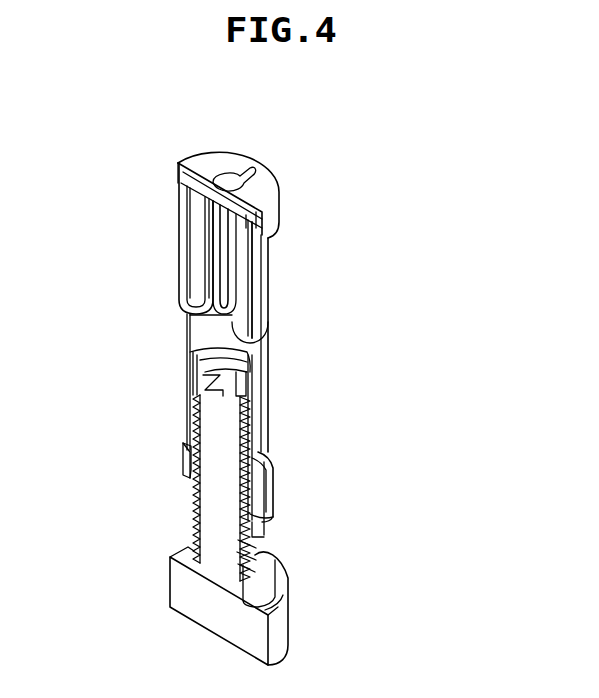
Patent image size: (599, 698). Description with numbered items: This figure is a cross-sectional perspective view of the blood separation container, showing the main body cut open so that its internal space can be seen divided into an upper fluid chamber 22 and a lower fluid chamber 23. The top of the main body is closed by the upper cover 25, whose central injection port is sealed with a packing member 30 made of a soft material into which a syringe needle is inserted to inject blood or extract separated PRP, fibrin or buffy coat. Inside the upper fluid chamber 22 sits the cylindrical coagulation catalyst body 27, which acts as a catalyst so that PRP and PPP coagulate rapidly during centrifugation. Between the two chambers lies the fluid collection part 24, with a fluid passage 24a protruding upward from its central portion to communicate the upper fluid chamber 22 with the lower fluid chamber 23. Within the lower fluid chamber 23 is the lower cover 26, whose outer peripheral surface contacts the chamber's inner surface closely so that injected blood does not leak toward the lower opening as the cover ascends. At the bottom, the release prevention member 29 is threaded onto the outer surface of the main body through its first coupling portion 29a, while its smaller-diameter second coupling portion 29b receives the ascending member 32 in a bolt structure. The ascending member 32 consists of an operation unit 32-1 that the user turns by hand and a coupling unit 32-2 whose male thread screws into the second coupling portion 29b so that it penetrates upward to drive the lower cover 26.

The upper fluid chamber 22 is at (269, 288).
The lower fluid chamber 23 is at (260, 418).
The fluid collection part 24 is at (272, 342).
The fluid passage 24a is at (218, 270).
The upper cover 25 is at (277, 212).
The lower cover 26 is at (194, 368).
The coagulation catalyst body 27 is at (185, 244).
The release prevention member 29 is at (327, 495).
The first coupling portion 29a is at (266, 494).
The second coupling portion 29b is at (264, 522).
The packing member 30 is at (228, 172).
The ascending member 32 is at (315, 606).
The operation unit 32-1 is at (288, 627).
The coupling unit 32-2 is at (254, 580).